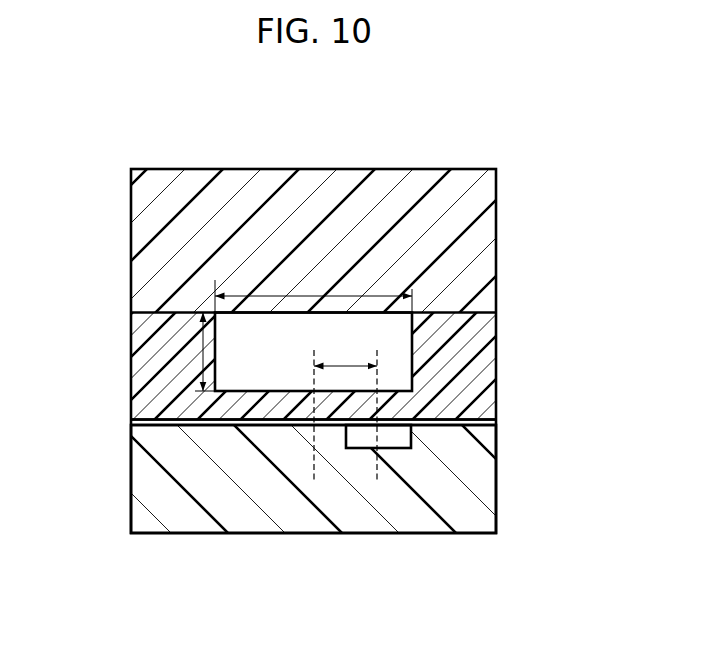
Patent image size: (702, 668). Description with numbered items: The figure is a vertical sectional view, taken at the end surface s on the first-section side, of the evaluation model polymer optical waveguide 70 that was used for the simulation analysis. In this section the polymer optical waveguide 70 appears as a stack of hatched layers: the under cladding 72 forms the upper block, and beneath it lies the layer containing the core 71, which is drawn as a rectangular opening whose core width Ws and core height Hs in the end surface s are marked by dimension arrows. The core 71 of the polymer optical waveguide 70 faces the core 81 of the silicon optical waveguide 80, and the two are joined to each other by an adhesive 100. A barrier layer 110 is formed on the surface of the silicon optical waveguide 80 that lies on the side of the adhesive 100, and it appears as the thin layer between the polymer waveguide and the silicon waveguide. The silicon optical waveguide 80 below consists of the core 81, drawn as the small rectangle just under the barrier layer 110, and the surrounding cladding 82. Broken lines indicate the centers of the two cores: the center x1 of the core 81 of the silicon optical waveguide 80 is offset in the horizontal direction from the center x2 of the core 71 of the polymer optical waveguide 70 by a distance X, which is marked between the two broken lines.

The polymer optical waveguide 70 is at (500, 149).
The under cladding 72 is at (473, 242).
The core 71 is at (398, 365).
The adhesive 100 is at (152, 385).
The barrier layer 110 is at (132, 421).
The silicon optical waveguide 80 is at (480, 590).
The core 81 is at (390, 437).
The cladding 82 is at (458, 517).
The center of the core of the silicon optical waveguide x1 is at (378, 467).
The center of the core of the polymer optical waveguide x2 is at (316, 458).
The distance X is at (345, 351).
The core width Ws is at (313, 289).
The core height Hs is at (191, 352).